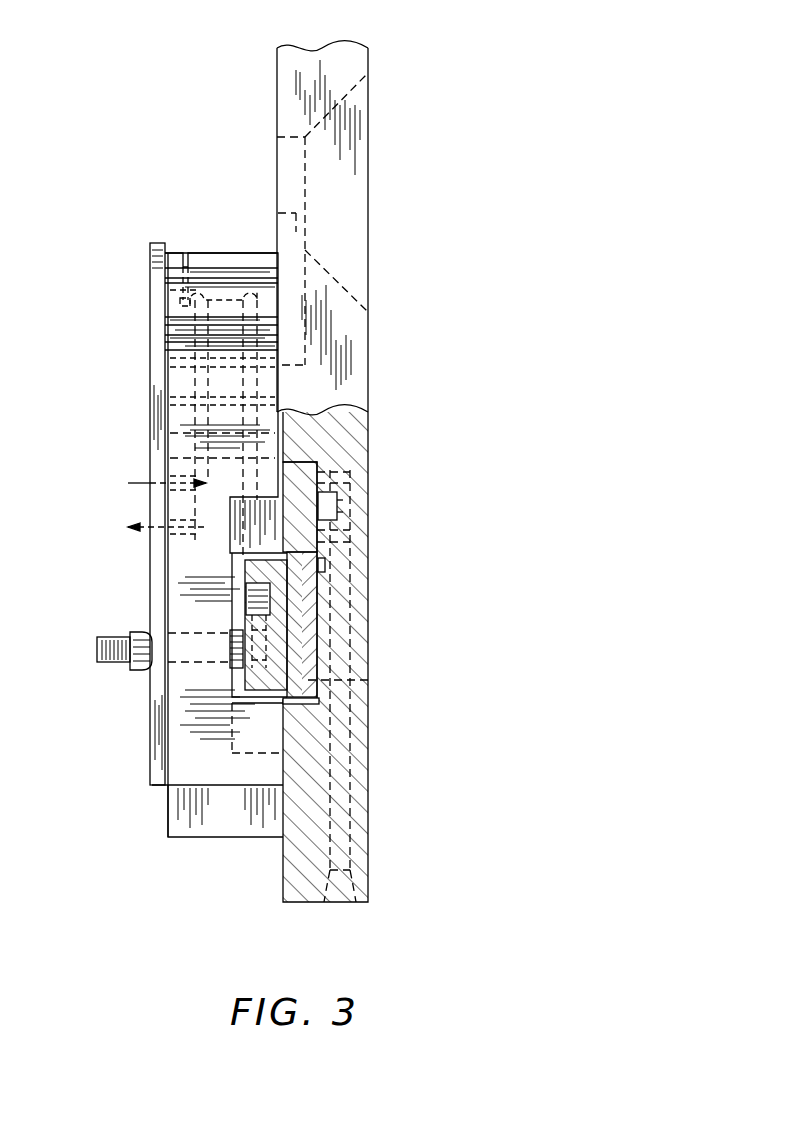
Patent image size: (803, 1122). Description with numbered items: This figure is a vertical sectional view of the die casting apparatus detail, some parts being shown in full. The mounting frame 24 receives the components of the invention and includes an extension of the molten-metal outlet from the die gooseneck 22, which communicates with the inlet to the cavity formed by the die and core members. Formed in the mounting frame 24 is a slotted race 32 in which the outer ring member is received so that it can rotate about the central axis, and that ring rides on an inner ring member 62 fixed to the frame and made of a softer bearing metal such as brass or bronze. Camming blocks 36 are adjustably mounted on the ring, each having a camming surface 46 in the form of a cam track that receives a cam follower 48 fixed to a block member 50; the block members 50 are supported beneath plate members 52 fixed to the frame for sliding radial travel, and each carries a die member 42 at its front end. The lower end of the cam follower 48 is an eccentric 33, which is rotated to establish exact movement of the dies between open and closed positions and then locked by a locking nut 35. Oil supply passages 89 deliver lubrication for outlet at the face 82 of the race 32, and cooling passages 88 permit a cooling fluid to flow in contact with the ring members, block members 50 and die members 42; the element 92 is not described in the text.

The die gooseneck 22 is at (345, 283).
The mounting frame 24 is at (366, 812).
The slotted race 32 is at (312, 703).
The eccentric 33 is at (372, 680).
The locking nut 35 is at (108, 662).
The camming block 36 is at (252, 677).
The die member 42 is at (216, 265).
The camming surface 46 is at (250, 598).
The cam follower 48 is at (200, 633).
The block member 50 is at (168, 573).
The plate member 52 is at (152, 447).
The inner ring member 62 is at (305, 465).
The face of the race 82 is at (310, 636).
The cooling passages 88 is at (330, 503).
The oil supply passages 89 is at (325, 568).
The passage 92 is at (277, 228).